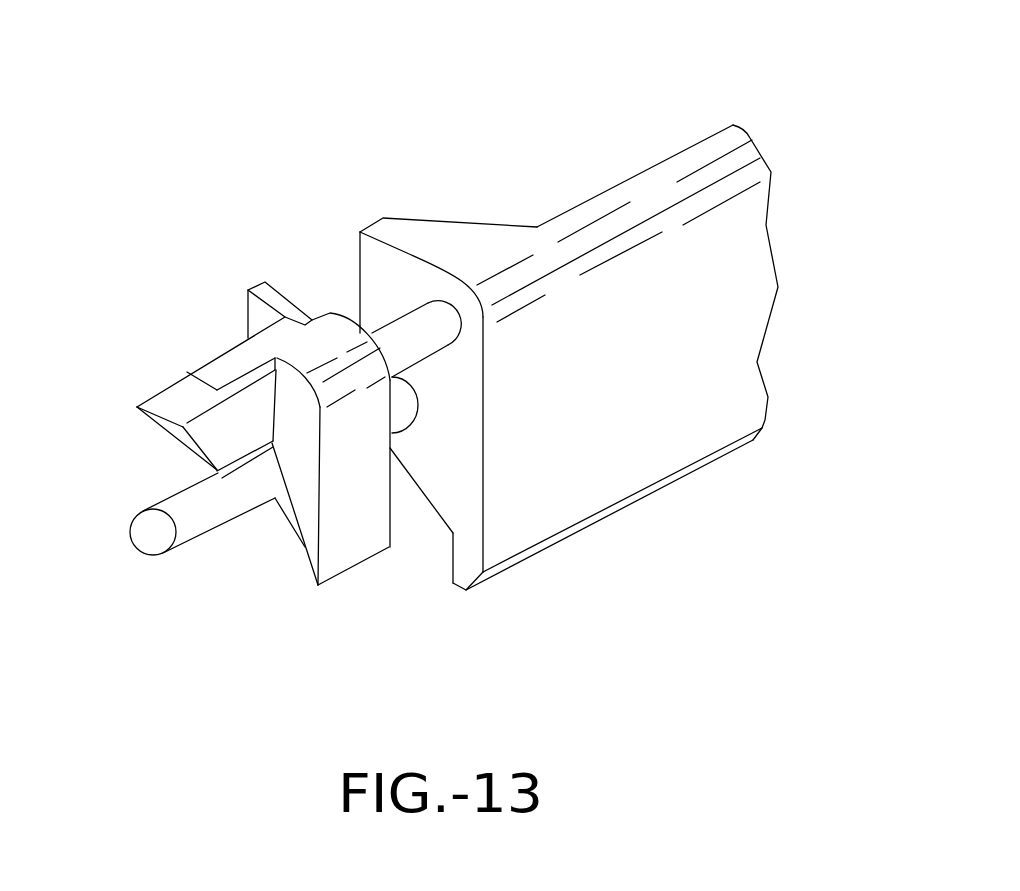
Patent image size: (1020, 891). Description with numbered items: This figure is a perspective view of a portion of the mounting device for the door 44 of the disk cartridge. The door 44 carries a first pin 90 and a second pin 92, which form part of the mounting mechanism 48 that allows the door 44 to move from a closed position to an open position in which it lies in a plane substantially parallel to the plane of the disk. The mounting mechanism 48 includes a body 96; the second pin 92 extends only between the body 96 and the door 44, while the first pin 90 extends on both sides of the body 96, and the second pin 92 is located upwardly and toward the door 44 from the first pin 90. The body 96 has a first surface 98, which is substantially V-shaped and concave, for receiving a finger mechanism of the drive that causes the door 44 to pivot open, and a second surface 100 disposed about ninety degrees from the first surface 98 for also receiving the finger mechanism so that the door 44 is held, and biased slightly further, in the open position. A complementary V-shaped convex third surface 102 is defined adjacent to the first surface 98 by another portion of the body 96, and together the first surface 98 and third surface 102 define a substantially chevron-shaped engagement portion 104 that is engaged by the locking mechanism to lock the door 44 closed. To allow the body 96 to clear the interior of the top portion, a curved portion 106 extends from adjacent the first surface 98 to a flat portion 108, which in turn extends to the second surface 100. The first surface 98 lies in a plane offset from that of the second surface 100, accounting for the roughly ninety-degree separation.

The door 44 is at (747, 135).
The mounting mechanism 48 is at (158, 244).
The first pin 90 is at (228, 503).
The second pin 92 is at (410, 327).
The body 96 is at (263, 340).
The first surface 98 is at (212, 440).
The second surface 100 is at (340, 577).
The third surface 102 is at (170, 378).
The engagement portion 104 is at (132, 446).
The curved portion 106 is at (367, 393).
The flat portion 108 is at (363, 510).